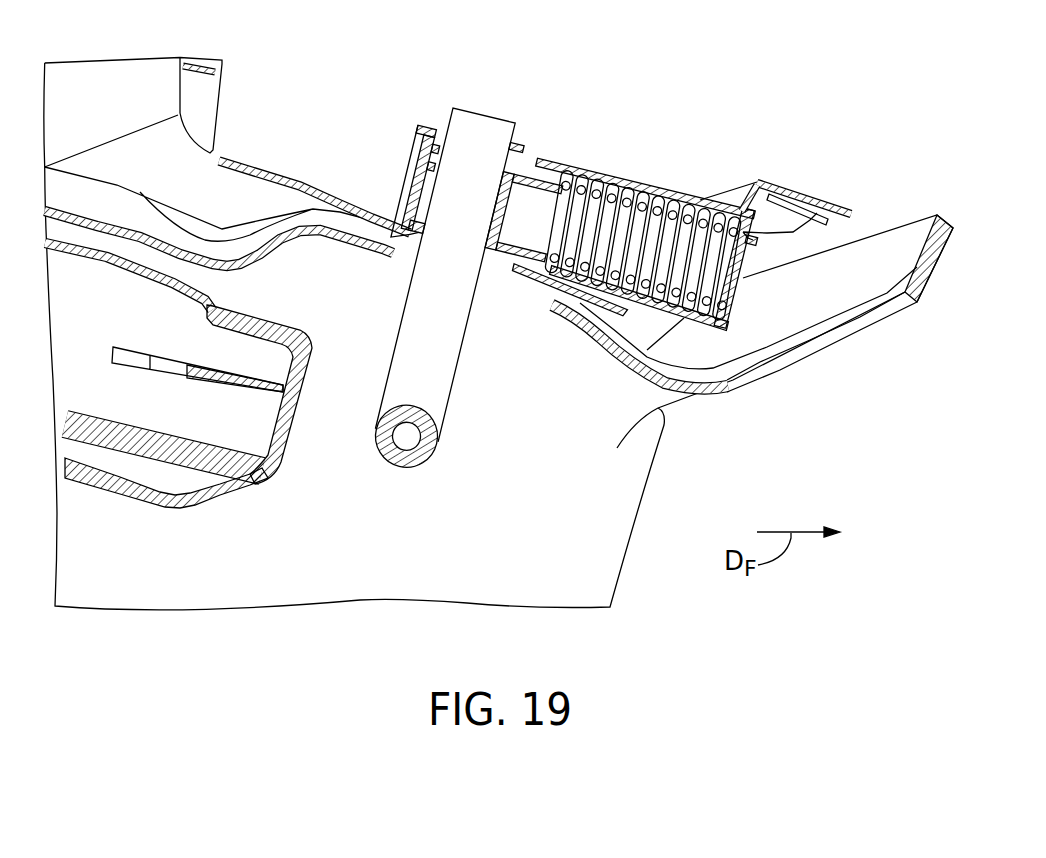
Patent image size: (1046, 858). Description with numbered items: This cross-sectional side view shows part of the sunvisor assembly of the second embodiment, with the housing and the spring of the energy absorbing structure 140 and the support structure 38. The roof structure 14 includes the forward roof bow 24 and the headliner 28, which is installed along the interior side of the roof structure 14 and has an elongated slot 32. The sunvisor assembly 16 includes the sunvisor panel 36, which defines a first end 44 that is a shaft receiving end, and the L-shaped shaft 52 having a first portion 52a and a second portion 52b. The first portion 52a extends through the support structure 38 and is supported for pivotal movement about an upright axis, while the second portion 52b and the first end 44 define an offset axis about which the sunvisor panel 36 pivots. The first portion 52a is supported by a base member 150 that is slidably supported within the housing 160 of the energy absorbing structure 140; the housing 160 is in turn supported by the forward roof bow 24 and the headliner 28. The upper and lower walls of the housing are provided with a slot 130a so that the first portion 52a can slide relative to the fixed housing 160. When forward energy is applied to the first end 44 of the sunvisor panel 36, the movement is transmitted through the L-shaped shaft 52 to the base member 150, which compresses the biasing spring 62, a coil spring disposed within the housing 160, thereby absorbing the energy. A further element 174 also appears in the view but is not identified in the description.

The roof structure 14 is at (126, 78).
The sunvisor assembly 16 is at (100, 491).
The forward roof bow 24 is at (757, 183).
The headliner 28 is at (94, 221).
The elongated slot 32 is at (552, 308).
The sunvisor panel 36 is at (150, 445).
The support structure 38 is at (423, 124).
The first end 44 is at (295, 435).
The L-shaped shaft 52 is at (430, 457).
The first portion 52a is at (420, 360).
The second portion 52b is at (390, 467).
The biasing member 62 is at (648, 213).
The slot 130a is at (540, 160).
The energy absorbing structure 140 is at (573, 161).
The base member 150 is at (515, 269).
The housing 160 is at (616, 178).
The flange 174 is at (305, 182).